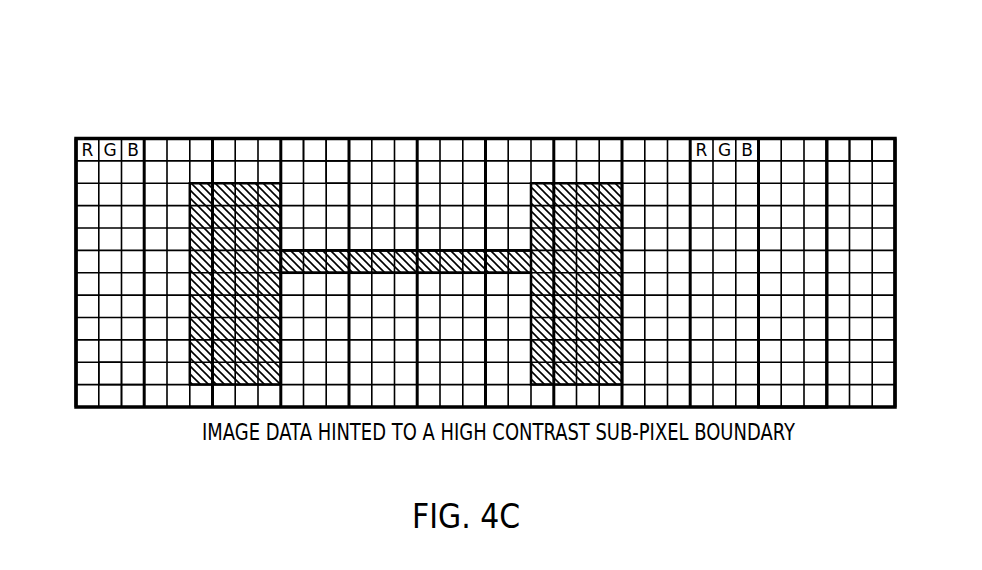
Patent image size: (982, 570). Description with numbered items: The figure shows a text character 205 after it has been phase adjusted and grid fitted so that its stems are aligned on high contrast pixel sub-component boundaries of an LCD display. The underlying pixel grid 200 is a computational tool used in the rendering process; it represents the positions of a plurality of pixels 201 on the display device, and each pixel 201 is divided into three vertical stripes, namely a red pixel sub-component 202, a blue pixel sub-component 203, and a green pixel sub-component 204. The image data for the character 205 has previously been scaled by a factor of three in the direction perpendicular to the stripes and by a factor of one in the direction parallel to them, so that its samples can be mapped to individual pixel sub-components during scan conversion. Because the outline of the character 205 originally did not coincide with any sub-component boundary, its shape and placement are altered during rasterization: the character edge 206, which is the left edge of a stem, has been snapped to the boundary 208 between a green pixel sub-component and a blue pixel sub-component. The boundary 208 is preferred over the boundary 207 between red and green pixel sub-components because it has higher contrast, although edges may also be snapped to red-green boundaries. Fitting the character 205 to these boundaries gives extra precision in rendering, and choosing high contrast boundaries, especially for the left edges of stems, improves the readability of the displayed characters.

The pixel grid 200 is at (800, 97).
The pixel 201 is at (770, 137).
The red pixel sub-component 202 is at (837, 137).
The blue pixel sub-component 203 is at (865, 137).
The green pixel sub-component 204 is at (890, 138).
The text character 205 is at (403, 250).
The character edge 206 is at (192, 285).
The boundary between red and green pixel sub-components 207 is at (300, 150).
The boundary between green and blue pixel sub-components 208 is at (330, 172).